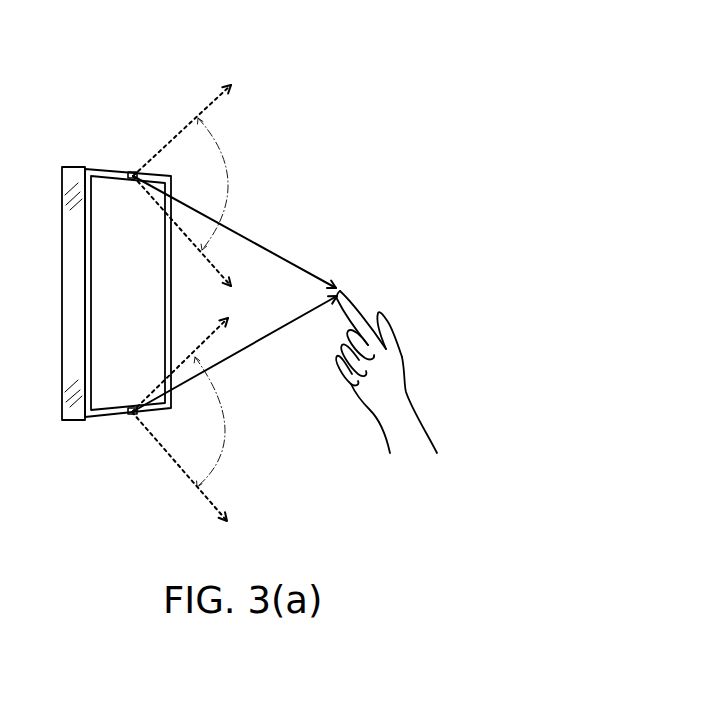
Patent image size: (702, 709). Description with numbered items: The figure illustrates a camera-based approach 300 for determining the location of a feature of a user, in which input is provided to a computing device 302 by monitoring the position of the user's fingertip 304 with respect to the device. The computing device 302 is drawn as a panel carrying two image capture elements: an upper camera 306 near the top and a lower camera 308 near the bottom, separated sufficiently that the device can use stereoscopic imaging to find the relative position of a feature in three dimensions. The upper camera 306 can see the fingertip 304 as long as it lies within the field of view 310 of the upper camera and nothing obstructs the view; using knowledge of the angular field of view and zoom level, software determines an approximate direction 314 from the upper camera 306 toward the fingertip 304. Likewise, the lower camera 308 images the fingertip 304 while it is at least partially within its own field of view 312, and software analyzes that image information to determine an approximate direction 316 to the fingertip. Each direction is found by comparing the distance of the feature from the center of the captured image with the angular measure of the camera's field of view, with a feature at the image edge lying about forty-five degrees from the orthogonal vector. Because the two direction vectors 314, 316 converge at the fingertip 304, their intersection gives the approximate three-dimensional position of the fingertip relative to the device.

The system 300 is at (555, 95).
The computing device 302 is at (102, 167).
The fingertip 304 is at (352, 289).
The upper camera 306 is at (135, 170).
The lower camera 308 is at (132, 412).
The field of view 310 is at (207, 108).
The field of view 312 is at (177, 468).
The approximate direction 314 is at (262, 247).
The approximate direction 316 is at (252, 343).